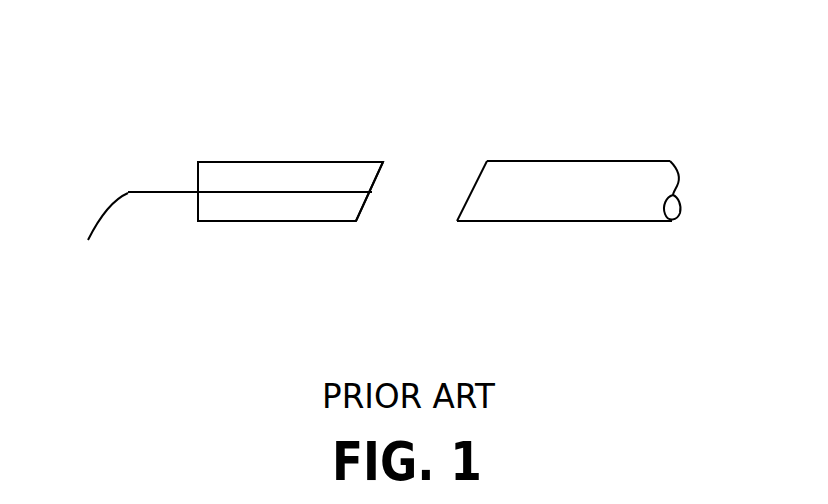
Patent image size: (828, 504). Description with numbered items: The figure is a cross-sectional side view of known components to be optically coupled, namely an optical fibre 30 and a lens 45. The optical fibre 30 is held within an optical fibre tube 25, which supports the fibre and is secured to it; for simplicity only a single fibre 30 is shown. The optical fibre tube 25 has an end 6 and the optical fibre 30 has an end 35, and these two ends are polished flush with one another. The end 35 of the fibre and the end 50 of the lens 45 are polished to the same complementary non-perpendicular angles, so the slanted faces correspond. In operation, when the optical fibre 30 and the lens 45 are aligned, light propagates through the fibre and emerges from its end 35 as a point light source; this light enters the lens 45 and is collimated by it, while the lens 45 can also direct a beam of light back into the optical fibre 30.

The optical fibre 30 is at (130, 193).
The optical fibre tube 25 is at (287, 190).
The end of the optical fibre 35 is at (373, 192).
The end of the optical fibre tube 6 is at (381, 171).
The end of the lens 50 is at (472, 188).
The lens 45 is at (601, 207).